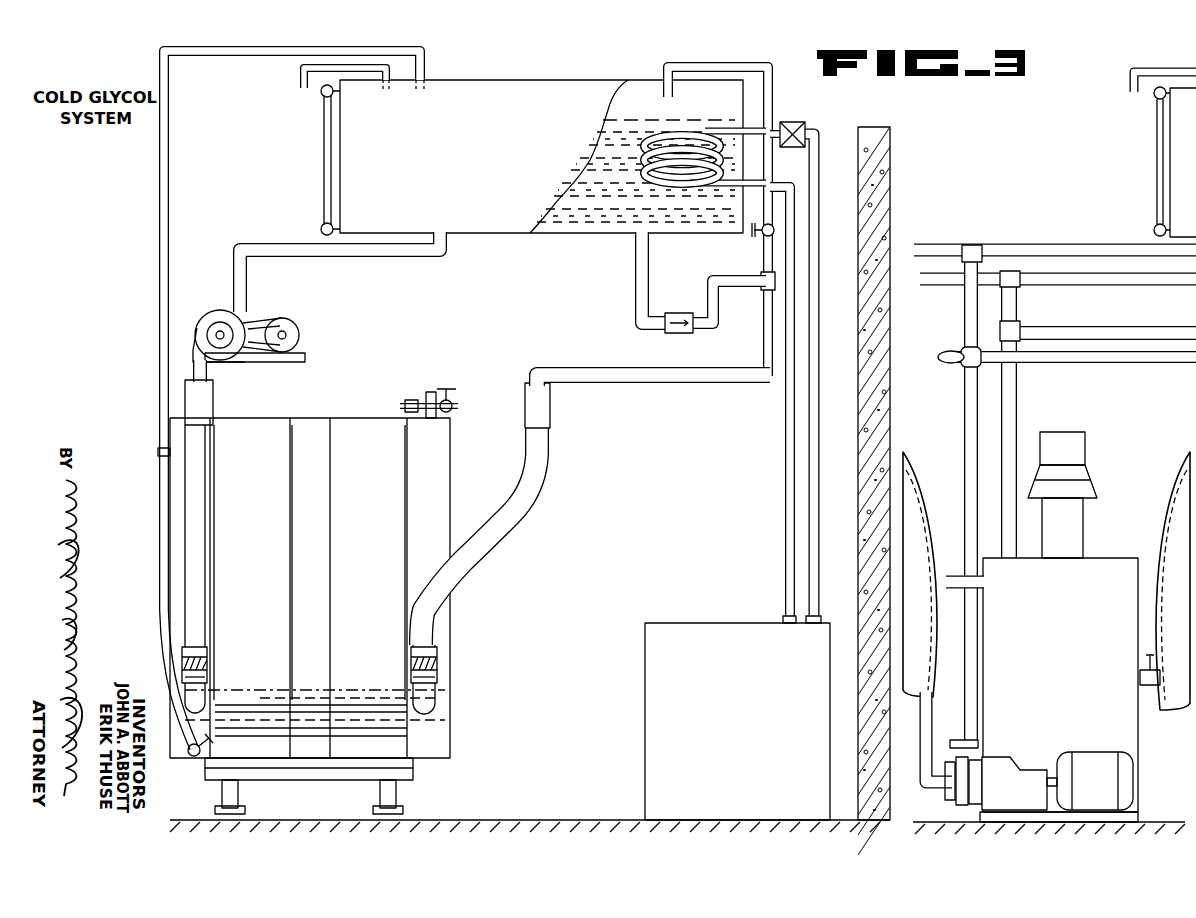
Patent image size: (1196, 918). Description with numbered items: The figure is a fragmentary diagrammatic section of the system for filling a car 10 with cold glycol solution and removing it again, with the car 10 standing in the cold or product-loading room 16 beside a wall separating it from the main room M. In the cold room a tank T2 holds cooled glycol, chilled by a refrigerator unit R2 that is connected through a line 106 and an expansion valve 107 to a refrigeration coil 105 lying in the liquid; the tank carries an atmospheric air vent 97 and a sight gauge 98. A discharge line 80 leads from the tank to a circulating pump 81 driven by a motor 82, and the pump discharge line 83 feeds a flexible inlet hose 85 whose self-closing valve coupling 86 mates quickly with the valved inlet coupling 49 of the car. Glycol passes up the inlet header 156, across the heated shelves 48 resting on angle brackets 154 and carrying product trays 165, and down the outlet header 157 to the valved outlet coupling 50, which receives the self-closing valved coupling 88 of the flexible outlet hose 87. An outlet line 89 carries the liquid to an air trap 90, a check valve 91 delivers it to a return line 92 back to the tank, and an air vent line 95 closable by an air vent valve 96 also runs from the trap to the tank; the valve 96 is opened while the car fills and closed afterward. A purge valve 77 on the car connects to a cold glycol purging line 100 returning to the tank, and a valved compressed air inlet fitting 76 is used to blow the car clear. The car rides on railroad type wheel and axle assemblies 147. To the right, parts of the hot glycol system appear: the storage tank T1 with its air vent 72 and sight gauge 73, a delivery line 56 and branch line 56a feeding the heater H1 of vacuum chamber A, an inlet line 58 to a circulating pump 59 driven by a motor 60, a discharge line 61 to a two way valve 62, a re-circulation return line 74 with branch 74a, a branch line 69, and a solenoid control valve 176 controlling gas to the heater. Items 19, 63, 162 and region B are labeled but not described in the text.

The car 10 is at (325, 410).
The cold room 16 is at (870, 133).
The legs 19 is at (378, 806).
The heated shelves 48 is at (336, 688).
The valved inlet coupling 49 is at (205, 673).
The valved outlet coupling 50 is at (437, 673).
The delivery line 56 is at (1088, 290).
The branch line 56a is at (1018, 383).
The inlet line 58 is at (970, 581).
The circulating pump 59 is at (1001, 775).
The motor 60 is at (1095, 781).
The discharge line 61 is at (964, 470).
The two way valve 62 is at (962, 352).
The pipe 63 is at (1124, 360).
The branch line 69 is at (1100, 328).
The air vent 72 is at (1165, 70).
The sight gauge 73 is at (1157, 119).
The re-circulation return line 74 is at (1114, 248).
The branch 74a is at (964, 305).
The valved compressed air inlet fitting 76 is at (430, 400).
The purge valve 77 is at (192, 756).
The discharge line 80 is at (364, 257).
The circulating pump 81 is at (216, 312).
The motor 82 is at (288, 320).
The discharge line 83 is at (212, 378).
The flexible inlet hose 85 is at (203, 510).
The self-closing valve coupling 86 is at (207, 654).
The flexible outlet hose 87 is at (549, 474).
The self-closing valved coupling 88 is at (438, 655).
The outlet line 89 is at (600, 370).
The air trap 90 is at (714, 275).
The check valve 91 is at (680, 313).
The return line 92 is at (636, 254).
The air vent line 95 is at (718, 64).
The air vent valve 96 is at (760, 234).
The atmospheric air vent 97 is at (300, 66).
The sight gauge 98 is at (323, 120).
The cold glycol purging line 100 is at (282, 49).
The refrigeration coil 105 is at (672, 136).
The line 106 is at (808, 464).
The expansion valve 107 is at (794, 122).
The wheel and axle assemblies 147 is at (378, 777).
The angle brackets 154 is at (268, 726).
The inlet header 156 is at (213, 550).
The outlet header 157 is at (410, 545).
The partition 162 is at (300, 561).
The product trays 165 is at (437, 716).
The solenoid control valve 176 is at (1138, 680).
The storage tank T1 is at (1162, 153).
The tank T2 is at (490, 88).
The refrigerator unit R2 is at (708, 620).
The main room M is at (1015, 203).
The heater H1 is at (1098, 558).
The vacuum chamber A is at (1165, 460).
The flame B is at (922, 460).